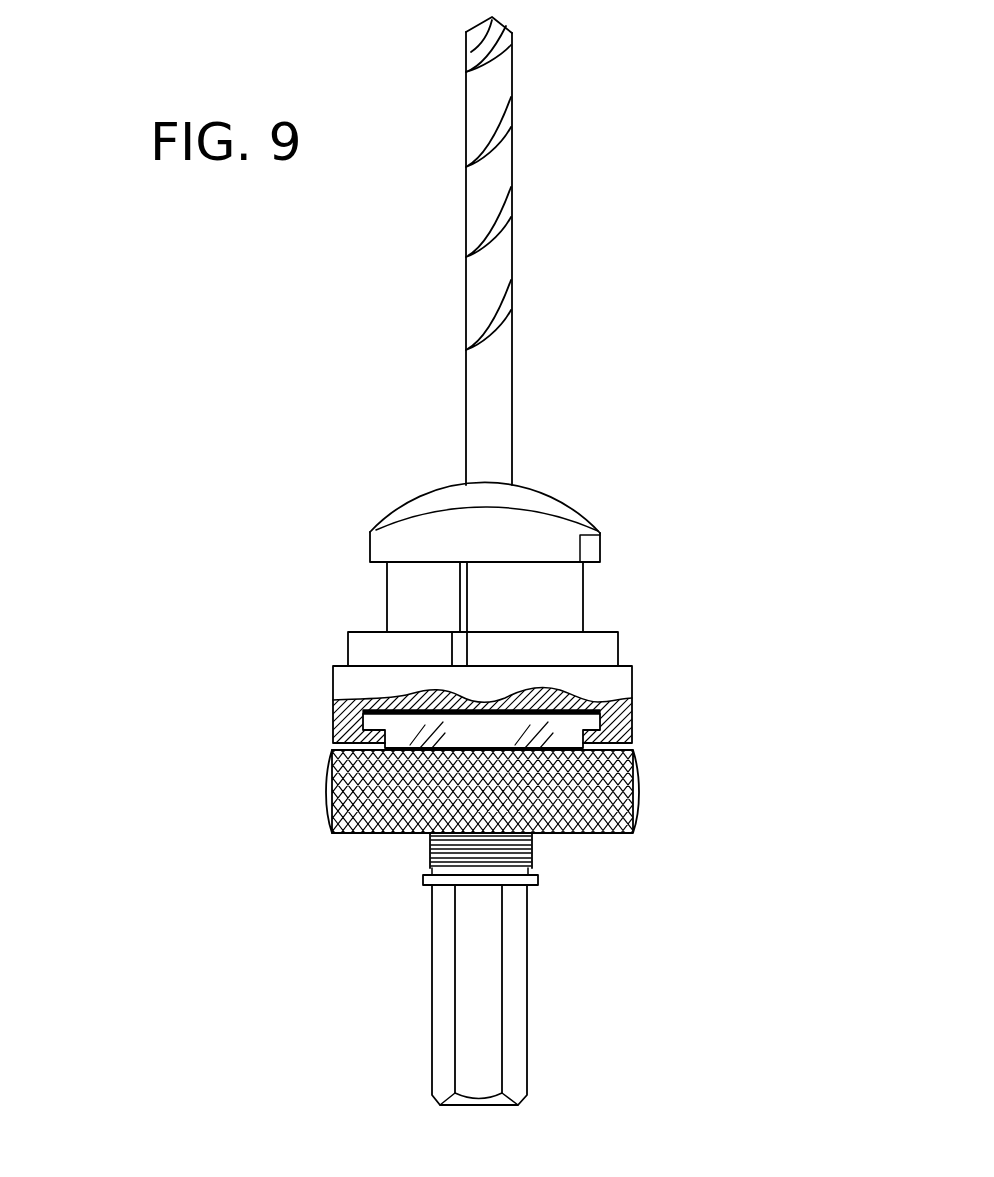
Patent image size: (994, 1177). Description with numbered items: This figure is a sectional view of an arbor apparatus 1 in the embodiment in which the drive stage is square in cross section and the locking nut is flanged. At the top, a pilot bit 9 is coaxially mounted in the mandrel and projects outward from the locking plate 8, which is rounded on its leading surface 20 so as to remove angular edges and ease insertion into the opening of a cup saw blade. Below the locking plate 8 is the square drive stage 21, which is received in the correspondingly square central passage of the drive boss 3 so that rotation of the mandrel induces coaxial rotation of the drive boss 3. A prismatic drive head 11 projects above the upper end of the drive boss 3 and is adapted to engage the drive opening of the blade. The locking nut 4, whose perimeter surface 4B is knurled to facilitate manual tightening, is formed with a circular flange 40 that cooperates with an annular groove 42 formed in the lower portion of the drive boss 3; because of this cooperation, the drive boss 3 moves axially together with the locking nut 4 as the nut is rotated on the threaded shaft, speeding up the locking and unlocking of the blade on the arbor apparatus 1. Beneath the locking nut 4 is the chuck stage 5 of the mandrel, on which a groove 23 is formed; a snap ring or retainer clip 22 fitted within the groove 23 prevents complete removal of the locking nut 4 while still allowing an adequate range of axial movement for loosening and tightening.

The arbor apparatus 1 is at (180, 467).
The pilot bit 9 is at (516, 244).
The leading surface 20 is at (538, 485).
The locking plate 8 is at (598, 520).
The square drive stage 21 is at (386, 592).
The prismatic drive head 11 is at (620, 652).
The drive boss 3 is at (333, 686).
The annular groove 42 is at (633, 721).
The circular flange 40 is at (336, 722).
The locking nut 4 is at (640, 793).
The perimeter surface 4B is at (325, 795).
The retainer clip 22 is at (538, 880).
The groove 23 is at (452, 884).
The chuck stage 5 is at (530, 1043).